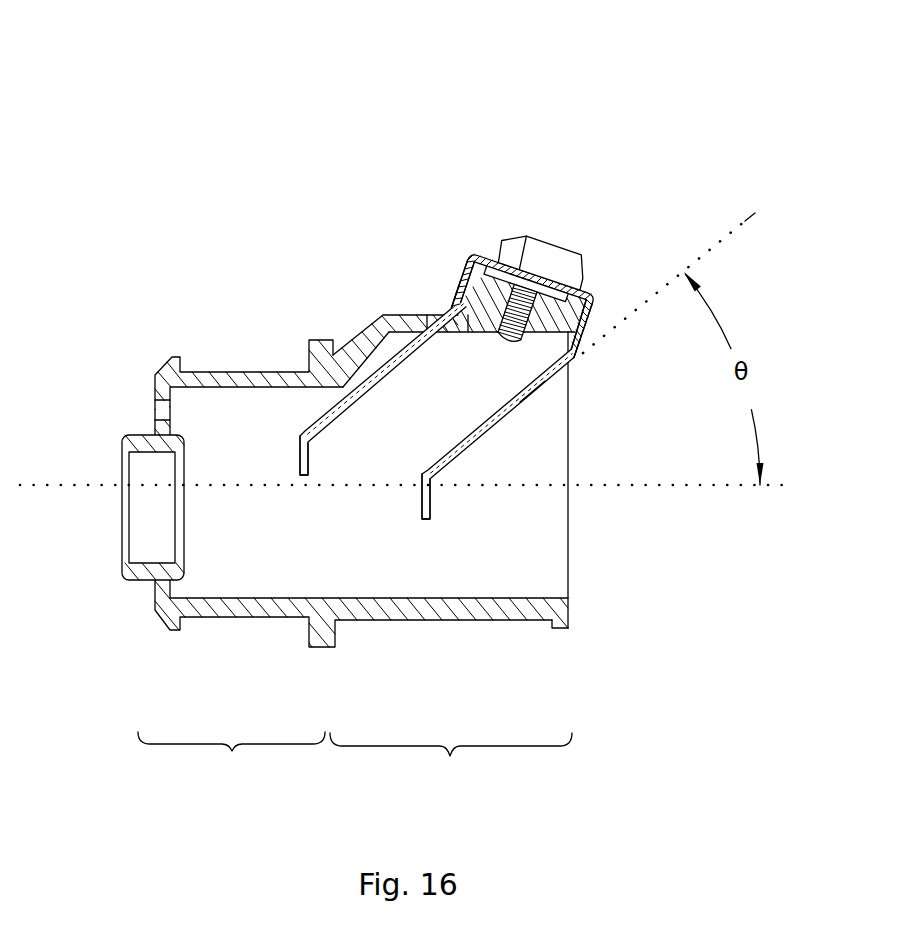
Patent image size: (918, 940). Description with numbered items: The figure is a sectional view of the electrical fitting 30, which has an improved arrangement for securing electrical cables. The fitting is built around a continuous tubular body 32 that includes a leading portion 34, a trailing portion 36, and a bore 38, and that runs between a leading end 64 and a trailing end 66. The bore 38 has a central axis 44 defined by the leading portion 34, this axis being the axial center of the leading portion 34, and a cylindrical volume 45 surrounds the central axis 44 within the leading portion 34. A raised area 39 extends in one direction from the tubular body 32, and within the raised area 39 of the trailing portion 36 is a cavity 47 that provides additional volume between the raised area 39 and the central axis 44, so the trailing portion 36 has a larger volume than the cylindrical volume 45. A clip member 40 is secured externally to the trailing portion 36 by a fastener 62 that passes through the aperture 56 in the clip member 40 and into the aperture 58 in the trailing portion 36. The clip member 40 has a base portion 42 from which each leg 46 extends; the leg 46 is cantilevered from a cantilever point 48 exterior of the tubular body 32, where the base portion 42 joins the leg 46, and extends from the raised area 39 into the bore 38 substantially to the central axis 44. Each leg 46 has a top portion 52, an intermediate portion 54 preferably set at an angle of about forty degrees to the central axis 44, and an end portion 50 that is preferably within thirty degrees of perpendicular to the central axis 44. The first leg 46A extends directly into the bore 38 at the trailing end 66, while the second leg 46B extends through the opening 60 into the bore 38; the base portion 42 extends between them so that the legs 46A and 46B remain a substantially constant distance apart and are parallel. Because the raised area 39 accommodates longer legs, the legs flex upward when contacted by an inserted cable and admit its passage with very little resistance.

The electrical fitting 30 is at (219, 143).
The tubular body 32 is at (401, 620).
The leading portion 34 is at (231, 754).
The trailing portion 36 is at (451, 759).
The bore 38 is at (553, 545).
The raised area 39 is at (390, 315).
The clip member 40 is at (481, 268).
The base portion 42 is at (479, 268).
The central axis 44 is at (230, 487).
The cylindrical volume 45 is at (227, 441).
The leg 46 is at (418, 396).
The first leg 46A is at (466, 448).
The second leg 46B is at (353, 387).
The cavity 47 is at (436, 368).
The cantilever point 48 is at (469, 254).
The end portion 50 is at (421, 496).
The top portion 52 is at (585, 330).
The intermediate portion 54 is at (532, 394).
The aperture 56 is at (568, 290).
The aperture 58 is at (537, 300).
The opening 60 is at (445, 298).
The fastener 62 is at (543, 246).
The leading end 64 is at (155, 389).
The trailing end 66 is at (570, 610).